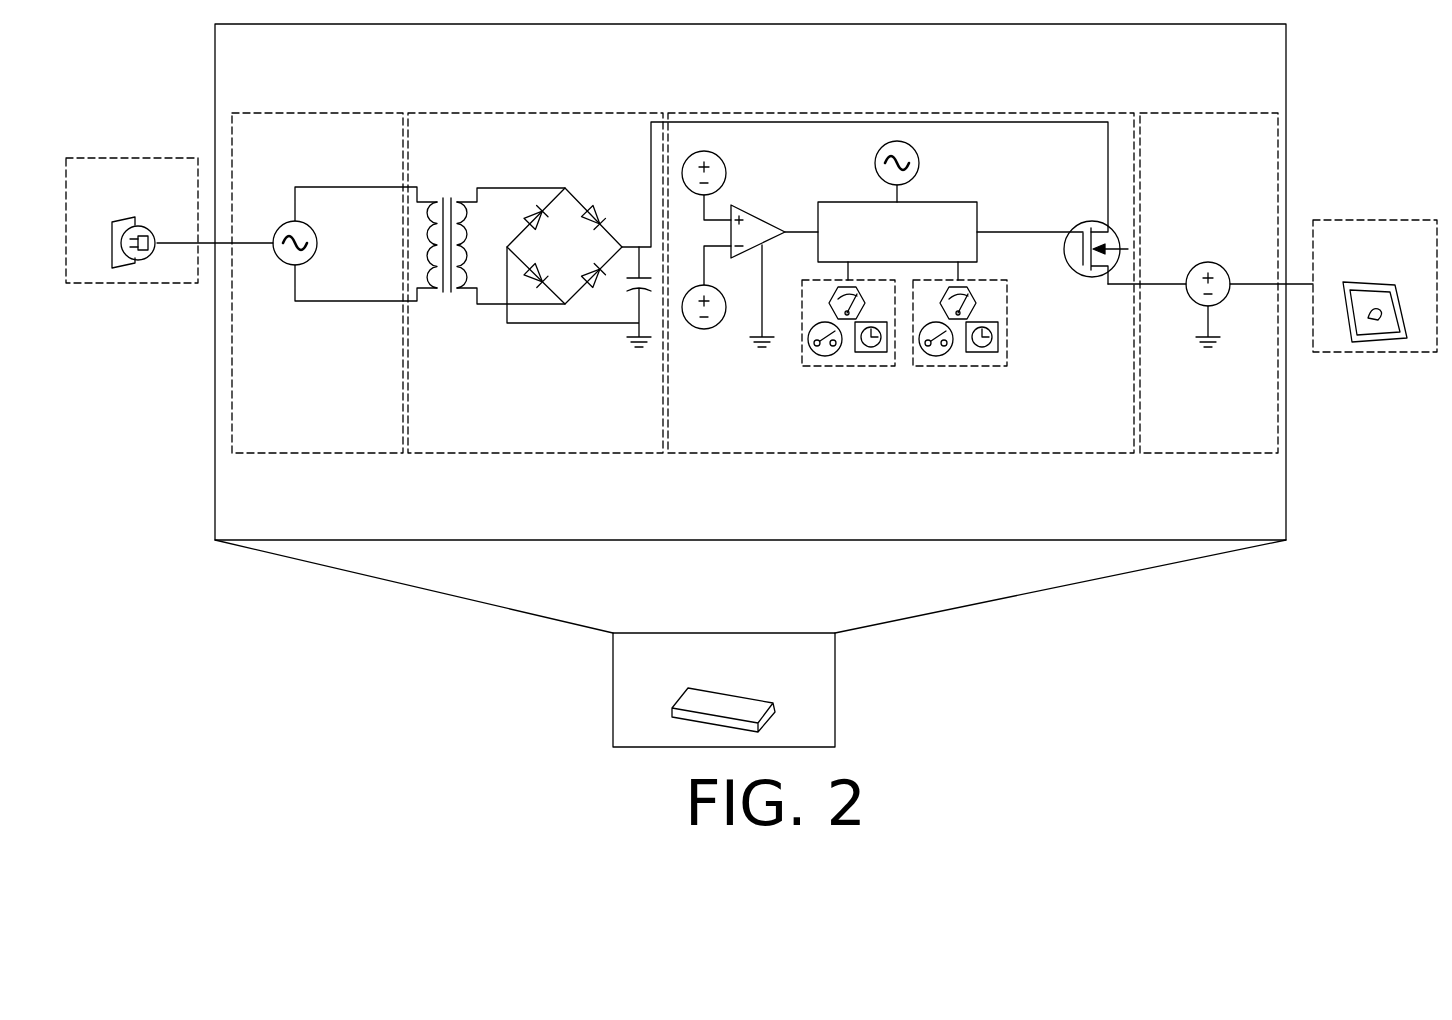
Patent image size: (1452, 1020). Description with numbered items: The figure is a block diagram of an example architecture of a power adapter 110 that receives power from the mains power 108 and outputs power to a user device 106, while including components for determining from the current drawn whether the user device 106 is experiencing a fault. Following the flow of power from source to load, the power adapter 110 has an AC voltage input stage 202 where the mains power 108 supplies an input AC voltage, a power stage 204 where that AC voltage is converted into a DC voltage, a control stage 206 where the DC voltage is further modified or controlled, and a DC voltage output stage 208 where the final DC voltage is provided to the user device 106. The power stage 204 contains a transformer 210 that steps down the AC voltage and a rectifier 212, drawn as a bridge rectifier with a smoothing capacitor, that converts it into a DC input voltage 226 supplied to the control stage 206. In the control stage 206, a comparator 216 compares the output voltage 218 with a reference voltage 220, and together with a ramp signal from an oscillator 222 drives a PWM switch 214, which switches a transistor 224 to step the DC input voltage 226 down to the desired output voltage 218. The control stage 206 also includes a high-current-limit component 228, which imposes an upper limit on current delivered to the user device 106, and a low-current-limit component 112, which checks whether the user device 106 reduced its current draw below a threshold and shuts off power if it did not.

The user device 106 is at (1375, 286).
The mains power 108 is at (132, 220).
The power adapter 110 is at (724, 690).
The low-current-limit component 112 is at (1002, 368).
The AC voltage input stage 202 is at (334, 283).
The power stage 204 is at (535, 283).
The control stage 206 is at (901, 283).
The DC voltage output stage 208 is at (1209, 283).
The transformer 210 is at (441, 185).
The rectifier 212 is at (562, 178).
The PWM switch 214 is at (950, 241).
The comparator 216 is at (750, 205).
The output voltage 218 is at (956, 293).
The reference voltage 220 is at (690, 148).
The oscillator 222 is at (905, 138).
The transistor 224 is at (1117, 213).
The DC input voltage 226 is at (861, 184).
The high-current-limit component 228 is at (808, 368).